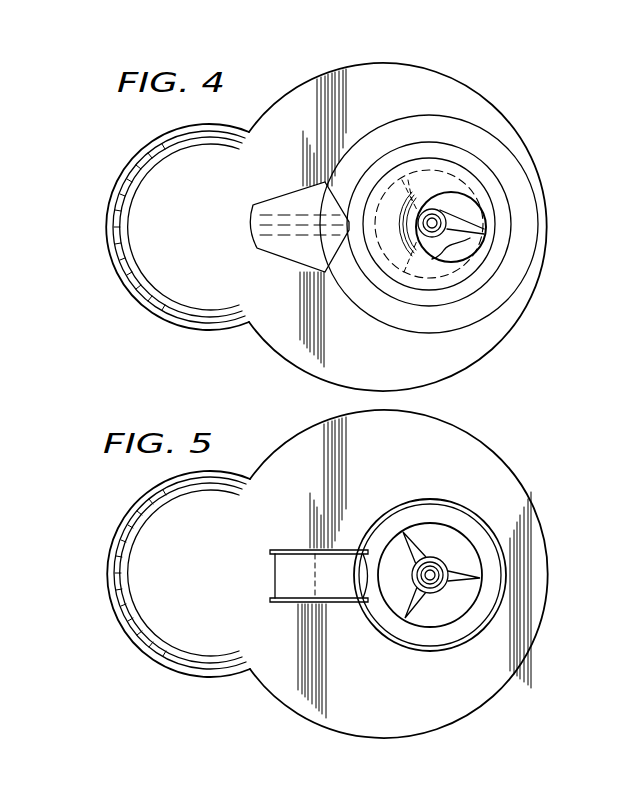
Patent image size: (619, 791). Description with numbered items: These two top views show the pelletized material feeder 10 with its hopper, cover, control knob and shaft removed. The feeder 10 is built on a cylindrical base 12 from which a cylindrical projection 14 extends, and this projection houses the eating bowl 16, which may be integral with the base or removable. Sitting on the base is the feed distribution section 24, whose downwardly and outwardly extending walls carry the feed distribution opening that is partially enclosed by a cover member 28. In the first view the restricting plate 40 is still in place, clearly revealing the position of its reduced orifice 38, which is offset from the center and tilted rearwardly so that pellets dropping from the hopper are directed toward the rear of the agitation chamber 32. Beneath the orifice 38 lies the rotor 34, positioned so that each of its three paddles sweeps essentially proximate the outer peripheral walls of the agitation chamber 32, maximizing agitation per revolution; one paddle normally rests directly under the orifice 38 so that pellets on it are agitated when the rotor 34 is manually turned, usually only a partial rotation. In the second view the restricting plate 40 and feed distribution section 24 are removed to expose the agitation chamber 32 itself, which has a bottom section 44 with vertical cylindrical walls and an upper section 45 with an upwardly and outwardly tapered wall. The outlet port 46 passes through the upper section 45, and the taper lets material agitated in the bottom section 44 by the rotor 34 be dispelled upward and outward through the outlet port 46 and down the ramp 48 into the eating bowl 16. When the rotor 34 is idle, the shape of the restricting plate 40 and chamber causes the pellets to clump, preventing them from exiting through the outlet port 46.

In FIG. 4, the pelletized material feeder 10 is at (320, 213).
In FIG. 5, the pelletized material feeder 10 is at (304, 565).
In FIG. 4, the cylindrical base 12 is at (428, 76).
In FIG. 5, the cylindrical base 12 is at (436, 428).
In FIG. 4, the cylindrical projection 14 is at (106, 205).
In FIG. 5, the cylindrical projection 14 is at (110, 622).
In FIG. 4, the eating bowl 16 is at (150, 176).
In FIG. 5, the eating bowl 16 is at (124, 577).
In FIG. 4, the feed distribution section 24 is at (490, 147).
In FIG. 4, the cover member 28 is at (277, 208).
In FIG. 5, the agitation chamber 32 is at (448, 612).
In FIG. 4, the rotor 34 is at (478, 236).
In FIG. 5, the rotor 34 is at (423, 610).
In FIG. 4, the orifice 38 is at (470, 211).
In FIG. 4, the restricting plate 40 is at (498, 256).
In FIG. 5, the bottom section 44 is at (448, 533).
In FIG. 5, the upper section 45 is at (424, 512).
In FIG. 5, the outlet port 46 is at (356, 588).
In FIG. 5, the ramp 48 is at (278, 566).